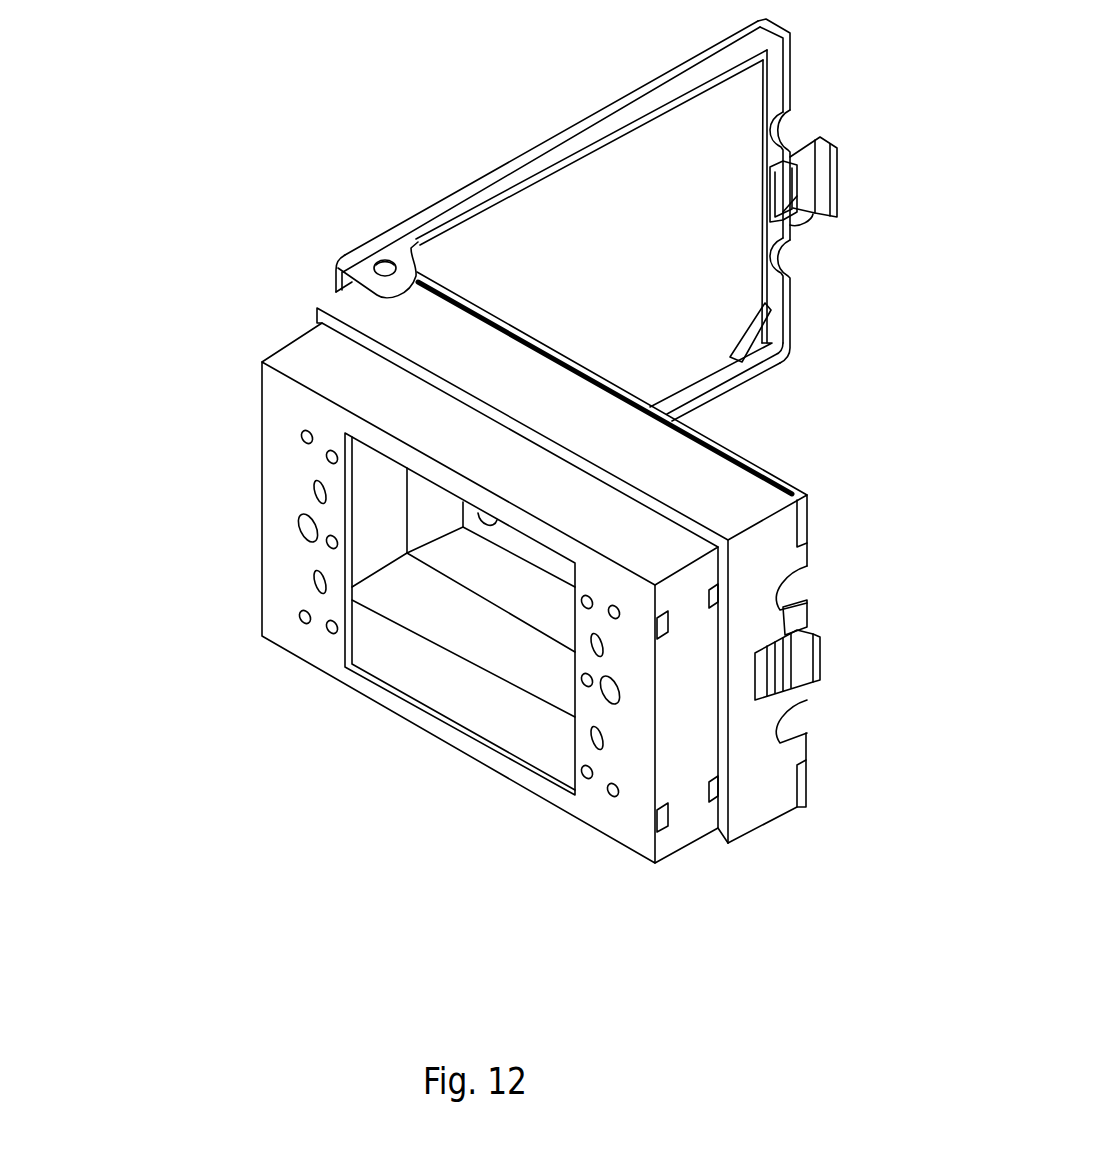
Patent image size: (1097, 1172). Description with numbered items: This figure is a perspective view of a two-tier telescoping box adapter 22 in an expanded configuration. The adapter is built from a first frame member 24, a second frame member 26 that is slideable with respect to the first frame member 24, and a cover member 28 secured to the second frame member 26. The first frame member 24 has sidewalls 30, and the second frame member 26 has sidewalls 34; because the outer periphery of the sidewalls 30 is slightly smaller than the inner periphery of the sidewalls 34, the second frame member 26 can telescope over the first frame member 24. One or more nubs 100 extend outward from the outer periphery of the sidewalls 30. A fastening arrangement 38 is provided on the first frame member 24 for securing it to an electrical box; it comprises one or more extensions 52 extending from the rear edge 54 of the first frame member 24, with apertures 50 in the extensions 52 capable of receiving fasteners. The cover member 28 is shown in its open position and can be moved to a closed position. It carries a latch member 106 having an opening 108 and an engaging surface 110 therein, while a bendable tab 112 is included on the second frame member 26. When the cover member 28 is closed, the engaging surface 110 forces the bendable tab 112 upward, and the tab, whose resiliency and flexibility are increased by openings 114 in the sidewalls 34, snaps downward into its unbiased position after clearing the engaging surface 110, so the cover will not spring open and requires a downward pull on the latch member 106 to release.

The two-tier telescoping box adapter 22 is at (256, 210).
The first frame member 24 is at (262, 362).
The second frame member 26 is at (320, 306).
The cover member 28 is at (538, 147).
The sidewalls 30 is at (503, 464).
The sidewalls 34 is at (593, 428).
The fastening arrangement 38 is at (230, 528).
The apertures 50 is at (305, 623).
The extensions 52 is at (282, 481).
The rear edge 54 is at (262, 607).
The nubs 100 is at (668, 818).
The latch member 106 is at (838, 180).
The opening 108 is at (782, 190).
The engaging surface 110 is at (797, 196).
The bendable tab 112 is at (818, 662).
The openings 114 is at (784, 610).